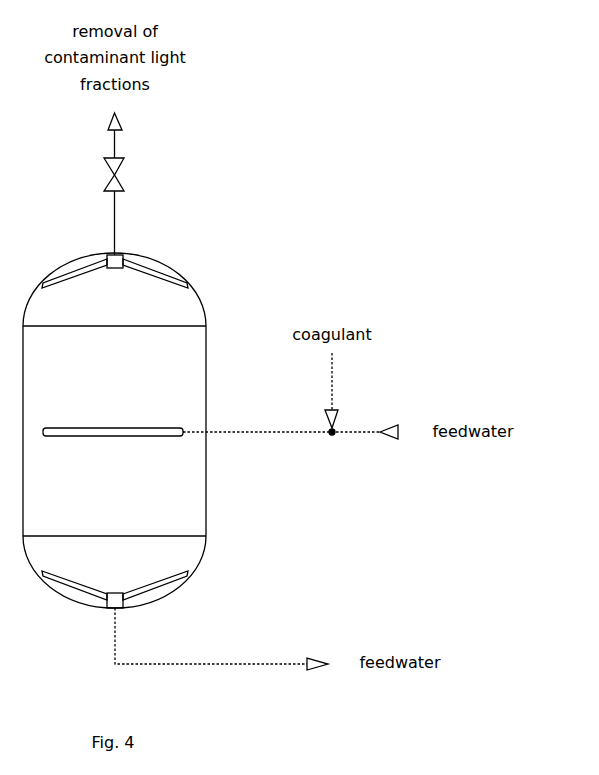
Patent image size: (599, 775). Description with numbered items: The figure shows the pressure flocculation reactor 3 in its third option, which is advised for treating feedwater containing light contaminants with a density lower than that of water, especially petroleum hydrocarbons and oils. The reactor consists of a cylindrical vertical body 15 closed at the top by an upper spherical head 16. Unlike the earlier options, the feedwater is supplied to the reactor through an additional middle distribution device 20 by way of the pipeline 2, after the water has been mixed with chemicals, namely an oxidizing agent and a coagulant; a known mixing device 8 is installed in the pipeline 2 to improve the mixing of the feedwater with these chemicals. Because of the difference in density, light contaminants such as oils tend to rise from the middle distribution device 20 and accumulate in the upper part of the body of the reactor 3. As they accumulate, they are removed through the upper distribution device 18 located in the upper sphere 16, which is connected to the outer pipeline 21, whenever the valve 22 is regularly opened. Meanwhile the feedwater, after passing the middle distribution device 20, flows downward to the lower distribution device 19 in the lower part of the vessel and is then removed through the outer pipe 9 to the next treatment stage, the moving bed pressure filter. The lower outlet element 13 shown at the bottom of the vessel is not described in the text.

The pipeline 2 is at (290, 419).
The pressure flocculation reactor 3 is at (205, 470).
The mixing device 8 is at (320, 410).
The pipe 9 is at (221, 646).
The lower outlet nozzle 13 is at (147, 596).
The cylindrical vertical body 15 is at (127, 430).
The upper spherical head 16 is at (147, 259).
The upper distribution device 18 is at (74, 259).
The lower distribution device 19 is at (74, 595).
The middle distribution device 20 is at (110, 417).
The outer pipeline 21 is at (129, 184).
The valve 22 is at (130, 174).